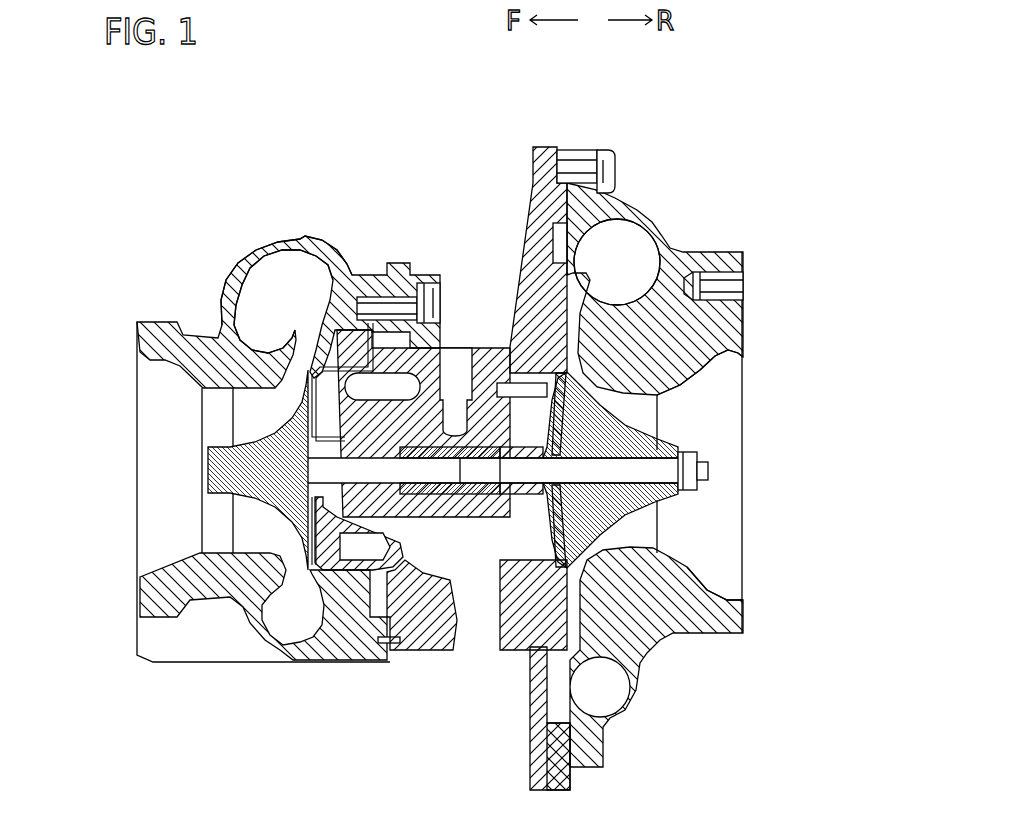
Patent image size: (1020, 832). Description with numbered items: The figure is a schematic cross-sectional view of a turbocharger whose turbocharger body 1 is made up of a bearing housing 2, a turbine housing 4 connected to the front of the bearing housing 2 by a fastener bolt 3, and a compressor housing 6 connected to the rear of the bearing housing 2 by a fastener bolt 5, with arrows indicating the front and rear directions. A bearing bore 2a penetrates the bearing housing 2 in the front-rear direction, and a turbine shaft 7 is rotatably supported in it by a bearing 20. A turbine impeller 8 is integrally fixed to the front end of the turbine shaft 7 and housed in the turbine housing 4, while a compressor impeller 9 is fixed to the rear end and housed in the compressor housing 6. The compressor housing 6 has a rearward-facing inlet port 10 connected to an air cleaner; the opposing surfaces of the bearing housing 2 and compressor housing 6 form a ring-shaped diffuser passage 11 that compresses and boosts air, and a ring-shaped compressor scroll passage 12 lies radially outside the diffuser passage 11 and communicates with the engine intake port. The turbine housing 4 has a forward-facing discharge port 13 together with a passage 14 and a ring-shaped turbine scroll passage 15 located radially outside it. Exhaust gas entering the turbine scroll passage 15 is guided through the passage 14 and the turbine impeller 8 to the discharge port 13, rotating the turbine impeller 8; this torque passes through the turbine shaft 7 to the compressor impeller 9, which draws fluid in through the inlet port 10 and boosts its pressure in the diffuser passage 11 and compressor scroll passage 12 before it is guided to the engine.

The turbocharger body 1 is at (198, 162).
The bearing housing 2 is at (488, 347).
The bearing bore 2a is at (490, 515).
The fastener bolt 3 is at (425, 283).
The turbine housing 4 is at (317, 247).
The fastener bolt 5 is at (594, 150).
The compressor housing 6 is at (717, 250).
The turbine shaft 7 is at (428, 490).
The turbine impeller 8 is at (235, 537).
The compressor impeller 9 is at (642, 442).
The inlet port 10 is at (717, 363).
The diffuser passage 11 is at (575, 312).
The compressor scroll passage 12 is at (636, 226).
The discharge port 13 is at (150, 368).
The passage 14 is at (231, 332).
The turbine scroll passage 15 is at (273, 278).
The bearing 20 is at (460, 500).